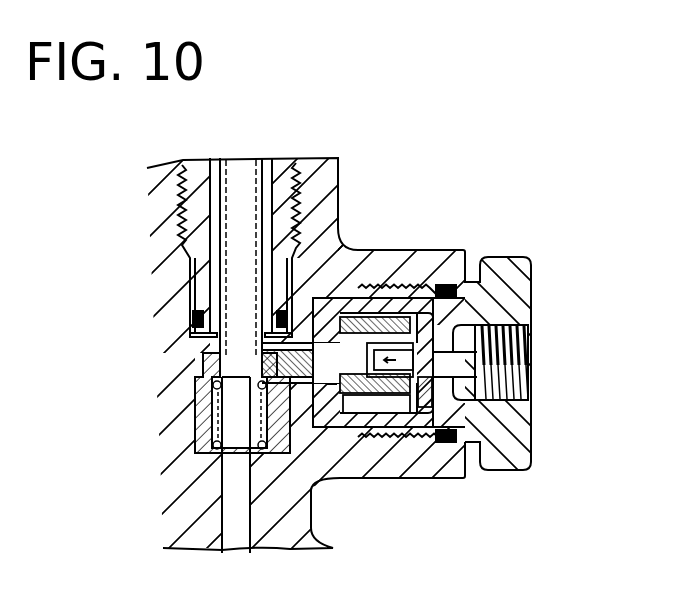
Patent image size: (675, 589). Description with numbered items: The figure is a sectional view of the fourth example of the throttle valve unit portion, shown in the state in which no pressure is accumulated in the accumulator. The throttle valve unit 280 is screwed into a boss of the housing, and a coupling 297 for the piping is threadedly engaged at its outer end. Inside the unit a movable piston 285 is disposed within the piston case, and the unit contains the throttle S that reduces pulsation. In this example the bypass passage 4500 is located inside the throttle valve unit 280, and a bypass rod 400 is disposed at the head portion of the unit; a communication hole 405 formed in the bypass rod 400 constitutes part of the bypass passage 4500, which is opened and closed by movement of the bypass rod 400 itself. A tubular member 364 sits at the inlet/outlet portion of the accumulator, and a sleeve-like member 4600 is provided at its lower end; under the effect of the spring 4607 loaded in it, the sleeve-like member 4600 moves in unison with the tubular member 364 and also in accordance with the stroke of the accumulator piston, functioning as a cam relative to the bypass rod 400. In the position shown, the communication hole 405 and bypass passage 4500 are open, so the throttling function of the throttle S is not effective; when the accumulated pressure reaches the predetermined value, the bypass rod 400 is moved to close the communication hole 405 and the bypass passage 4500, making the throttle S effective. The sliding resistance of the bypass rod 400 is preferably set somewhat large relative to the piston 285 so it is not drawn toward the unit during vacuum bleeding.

The tubular member 364 is at (220, 208).
The bypass rod 400 is at (305, 352).
The sleeve-like member 4600 is at (197, 400).
The spring 4607 is at (195, 440).
The communication hole 405 is at (328, 325).
The throttle valve unit 280 is at (388, 278).
The movable piston 285 is at (390, 420).
The coupling 297 is at (518, 290).
The bypass passage 4500 is at (440, 362).
The throttle S is at (353, 414).